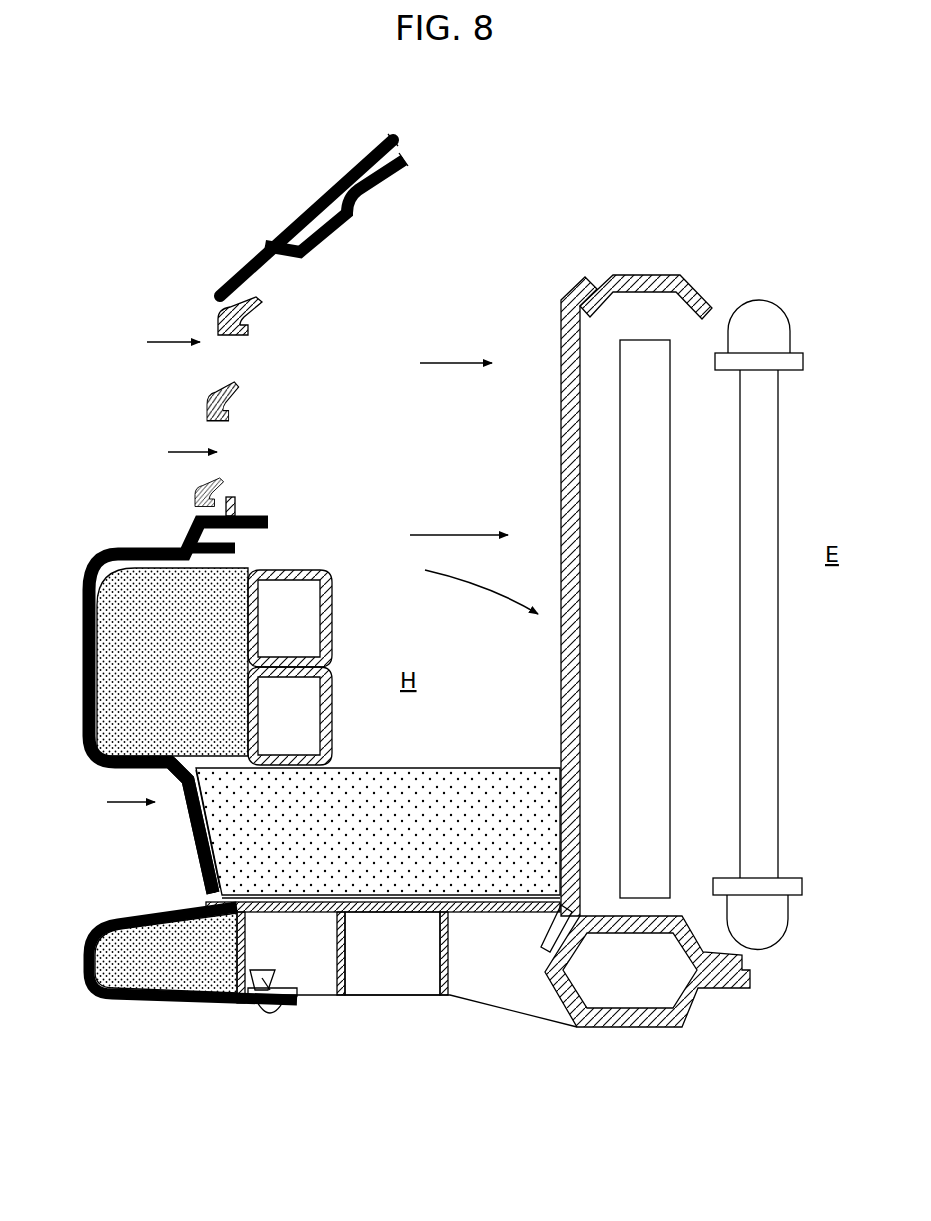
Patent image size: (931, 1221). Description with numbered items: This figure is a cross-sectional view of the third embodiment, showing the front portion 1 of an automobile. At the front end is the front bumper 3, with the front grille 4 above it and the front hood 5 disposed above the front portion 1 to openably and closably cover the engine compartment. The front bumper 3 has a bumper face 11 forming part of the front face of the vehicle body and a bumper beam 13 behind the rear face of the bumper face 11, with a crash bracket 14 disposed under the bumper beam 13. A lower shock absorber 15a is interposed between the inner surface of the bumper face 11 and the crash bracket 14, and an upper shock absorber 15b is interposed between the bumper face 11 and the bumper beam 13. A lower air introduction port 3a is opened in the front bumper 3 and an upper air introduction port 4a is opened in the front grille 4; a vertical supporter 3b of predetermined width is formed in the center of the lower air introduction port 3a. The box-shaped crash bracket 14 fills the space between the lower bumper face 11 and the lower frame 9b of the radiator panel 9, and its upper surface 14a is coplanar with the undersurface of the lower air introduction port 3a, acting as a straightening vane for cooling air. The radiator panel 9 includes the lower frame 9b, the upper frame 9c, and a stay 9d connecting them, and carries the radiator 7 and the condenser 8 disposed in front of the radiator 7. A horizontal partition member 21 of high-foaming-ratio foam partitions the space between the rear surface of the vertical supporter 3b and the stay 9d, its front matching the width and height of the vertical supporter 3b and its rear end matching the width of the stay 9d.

The front portion 1 is at (282, 140).
The front bumper 3 is at (232, 1042).
The lower air introduction port 3a is at (217, 868).
The vertical supporter 3b is at (188, 832).
The front grille 4 is at (217, 320).
The upper air introduction port 4a is at (273, 453).
The front hood 5 is at (358, 158).
The radiator 7 is at (770, 746).
The condenser 8 is at (665, 626).
The radiator panel 9 is at (621, 645).
The lower frame 9b is at (627, 1027).
The upper frame 9c is at (643, 282).
The stay 9d is at (566, 328).
The bumper face 11 is at (125, 556).
The bumper beam 13 is at (330, 608).
The crash bracket 14 is at (392, 1000).
The upper surface 14a is at (428, 880).
The lower shock absorber 15a is at (140, 985).
The upper shock absorber 15b is at (162, 578).
The horizontal partition member 21 is at (515, 785).